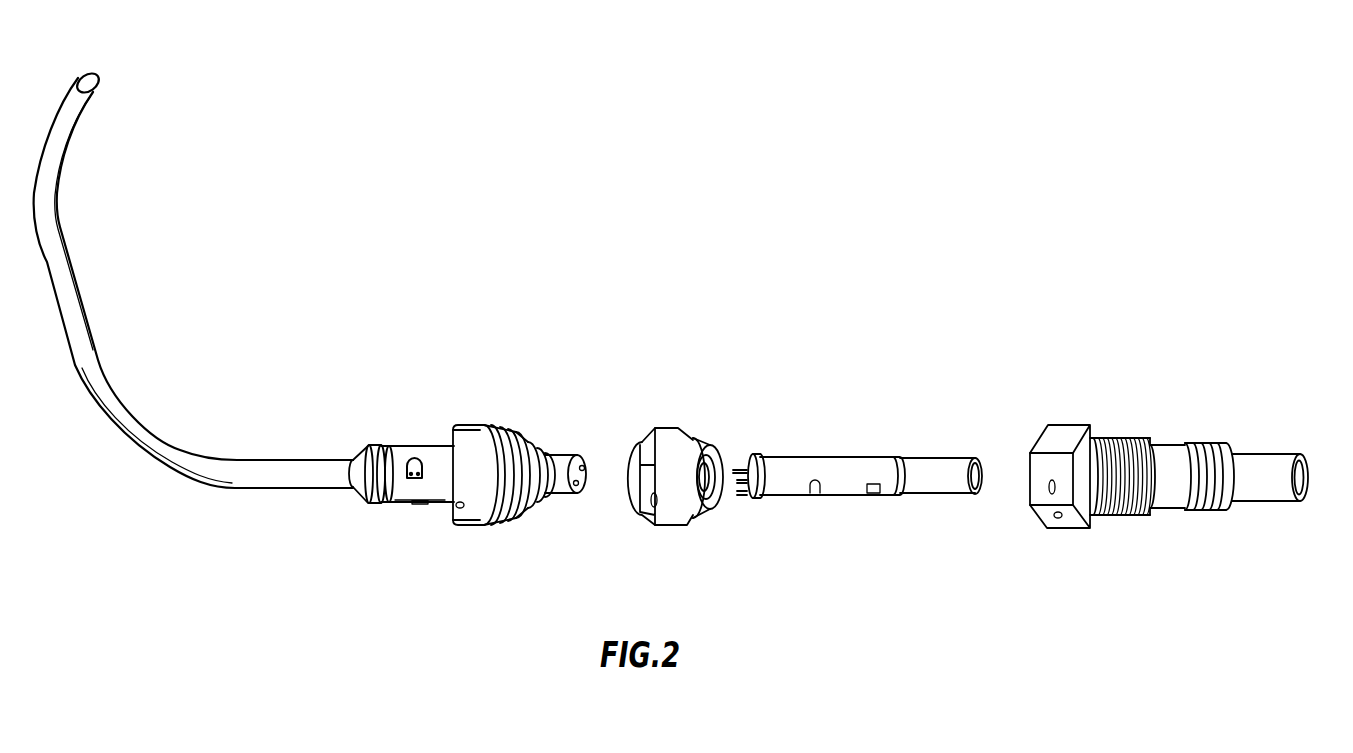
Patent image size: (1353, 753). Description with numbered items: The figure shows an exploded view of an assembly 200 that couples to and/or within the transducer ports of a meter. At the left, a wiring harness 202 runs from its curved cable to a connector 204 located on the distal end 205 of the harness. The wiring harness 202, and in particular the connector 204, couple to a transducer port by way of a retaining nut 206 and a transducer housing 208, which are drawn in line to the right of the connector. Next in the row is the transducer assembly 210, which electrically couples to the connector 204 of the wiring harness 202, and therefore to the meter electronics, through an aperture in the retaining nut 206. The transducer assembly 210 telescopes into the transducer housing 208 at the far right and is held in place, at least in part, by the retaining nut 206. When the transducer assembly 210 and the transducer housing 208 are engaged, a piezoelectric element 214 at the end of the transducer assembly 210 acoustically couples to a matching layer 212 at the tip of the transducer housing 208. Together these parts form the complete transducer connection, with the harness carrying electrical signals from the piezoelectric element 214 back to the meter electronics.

The assembly 200 is at (758, 140).
The wiring harness 202 is at (153, 435).
The connector 204 is at (475, 427).
The distal end 205 is at (578, 443).
The retaining nut 206 is at (667, 427).
The transducer housing 208 is at (1042, 533).
The transducer assembly 210 is at (743, 532).
The matching layer 212 is at (1310, 462).
The piezoelectric element 214 is at (982, 462).